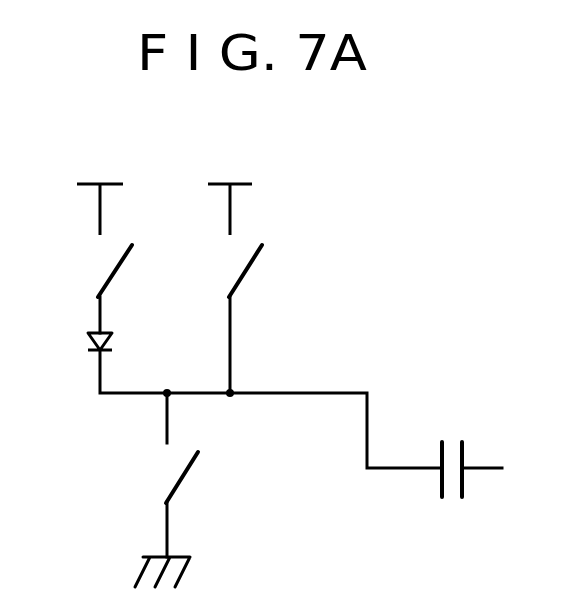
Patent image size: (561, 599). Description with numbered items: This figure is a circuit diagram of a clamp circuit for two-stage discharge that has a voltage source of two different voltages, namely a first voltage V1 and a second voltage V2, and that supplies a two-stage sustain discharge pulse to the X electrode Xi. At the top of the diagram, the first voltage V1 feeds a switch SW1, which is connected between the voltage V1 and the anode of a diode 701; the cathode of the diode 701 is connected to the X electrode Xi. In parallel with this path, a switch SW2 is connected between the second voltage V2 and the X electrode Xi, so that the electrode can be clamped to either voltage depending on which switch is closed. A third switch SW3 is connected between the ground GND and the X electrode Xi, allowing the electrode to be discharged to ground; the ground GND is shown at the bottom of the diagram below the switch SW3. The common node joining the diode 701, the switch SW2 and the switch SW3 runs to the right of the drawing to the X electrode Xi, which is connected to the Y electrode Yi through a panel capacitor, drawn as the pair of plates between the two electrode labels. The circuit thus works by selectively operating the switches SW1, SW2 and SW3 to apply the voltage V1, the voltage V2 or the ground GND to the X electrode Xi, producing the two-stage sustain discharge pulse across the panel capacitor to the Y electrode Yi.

The first voltage V1 is at (100, 192).
The second voltage V2 is at (230, 192).
The switch SW1 is at (107, 268).
The switch SW2 is at (240, 268).
The switch SW3 is at (173, 475).
The diode 701 is at (88, 345).
The ground GND is at (192, 564).
The X electrode Xi is at (440, 480).
The Y electrode Yi is at (465, 480).